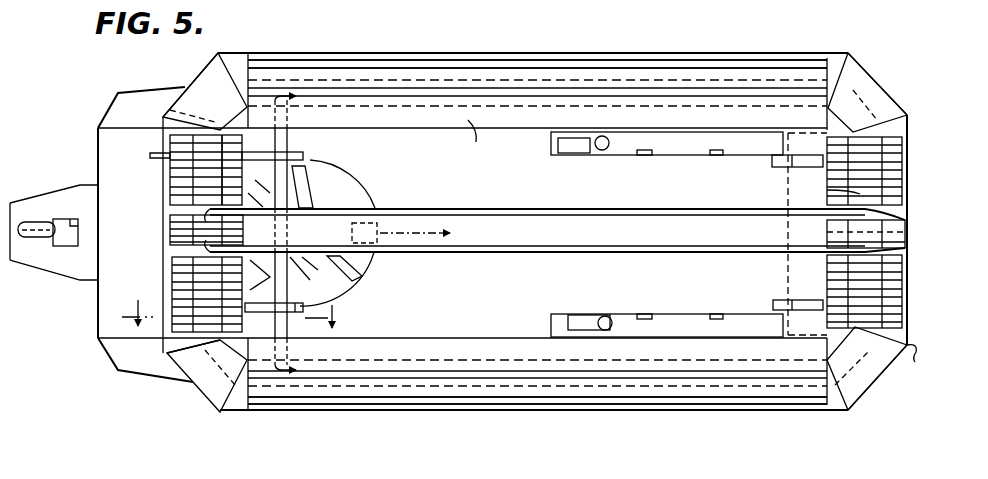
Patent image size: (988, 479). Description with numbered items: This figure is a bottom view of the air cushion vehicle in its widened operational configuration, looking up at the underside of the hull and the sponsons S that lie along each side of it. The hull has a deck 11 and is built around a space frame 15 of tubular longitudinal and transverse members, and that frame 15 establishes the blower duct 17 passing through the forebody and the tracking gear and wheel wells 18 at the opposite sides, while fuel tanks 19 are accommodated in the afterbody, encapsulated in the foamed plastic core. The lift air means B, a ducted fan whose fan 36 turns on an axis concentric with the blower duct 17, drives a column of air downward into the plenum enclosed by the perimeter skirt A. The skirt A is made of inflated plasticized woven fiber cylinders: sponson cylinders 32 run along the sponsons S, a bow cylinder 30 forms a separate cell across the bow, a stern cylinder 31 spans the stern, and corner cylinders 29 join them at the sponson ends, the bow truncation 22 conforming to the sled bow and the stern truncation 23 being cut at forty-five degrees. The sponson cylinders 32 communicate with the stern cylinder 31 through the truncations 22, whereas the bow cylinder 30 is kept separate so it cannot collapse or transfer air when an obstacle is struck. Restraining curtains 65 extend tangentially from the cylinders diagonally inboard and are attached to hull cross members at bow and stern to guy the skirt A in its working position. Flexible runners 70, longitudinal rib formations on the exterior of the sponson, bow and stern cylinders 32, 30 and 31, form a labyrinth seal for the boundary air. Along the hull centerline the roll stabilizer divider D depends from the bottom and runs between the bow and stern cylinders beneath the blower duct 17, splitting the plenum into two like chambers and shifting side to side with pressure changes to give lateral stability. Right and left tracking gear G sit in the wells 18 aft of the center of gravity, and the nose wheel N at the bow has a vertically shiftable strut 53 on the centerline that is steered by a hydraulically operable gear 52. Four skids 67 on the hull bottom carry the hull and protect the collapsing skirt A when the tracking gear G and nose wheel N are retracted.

The sponsons S is at (119, 90).
The corner cylinders 29 is at (175, 100).
The bow truncation 22 is at (218, 100).
The stern truncation 23 is at (858, 90).
The stern cylinder 31 is at (908, 361).
The runners 70 is at (388, 100).
The air cushion skirt A is at (492, 50).
The sponson cylinders 32 is at (569, 54).
The hydraulically operable gear 52 is at (664, 66).
The strut 53 is at (166, 155).
The bow cylinder 30 is at (179, 186).
The space frame 15 is at (232, 177).
The skids 67 is at (303, 156).
The fan 36 is at (313, 173).
The lift air means B is at (346, 192).
The blower duct 17 is at (362, 207).
The nose wheel N is at (48, 240).
The deck 11 is at (237, 309).
The restraining curtains 65 is at (835, 290).
The tracking gear G is at (600, 150).
The tracking gear and wheel wells 18 is at (696, 150).
The air cushion roll stabilizer divider D is at (539, 196).
The fuel tanks 19 is at (790, 187).